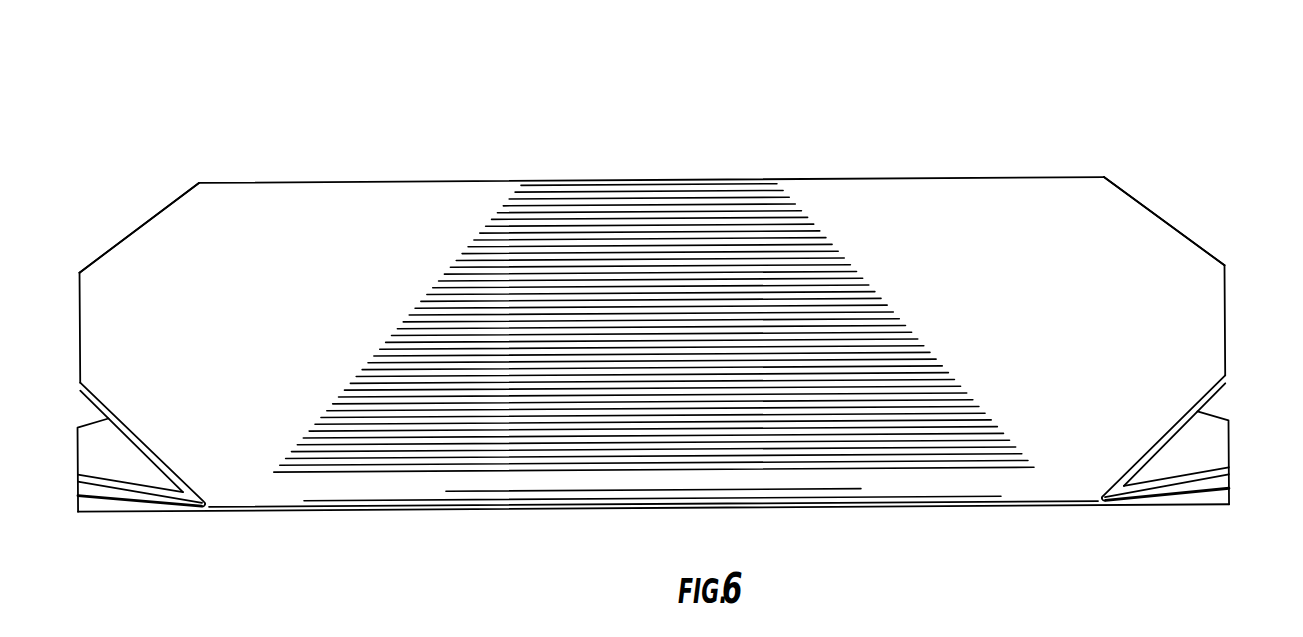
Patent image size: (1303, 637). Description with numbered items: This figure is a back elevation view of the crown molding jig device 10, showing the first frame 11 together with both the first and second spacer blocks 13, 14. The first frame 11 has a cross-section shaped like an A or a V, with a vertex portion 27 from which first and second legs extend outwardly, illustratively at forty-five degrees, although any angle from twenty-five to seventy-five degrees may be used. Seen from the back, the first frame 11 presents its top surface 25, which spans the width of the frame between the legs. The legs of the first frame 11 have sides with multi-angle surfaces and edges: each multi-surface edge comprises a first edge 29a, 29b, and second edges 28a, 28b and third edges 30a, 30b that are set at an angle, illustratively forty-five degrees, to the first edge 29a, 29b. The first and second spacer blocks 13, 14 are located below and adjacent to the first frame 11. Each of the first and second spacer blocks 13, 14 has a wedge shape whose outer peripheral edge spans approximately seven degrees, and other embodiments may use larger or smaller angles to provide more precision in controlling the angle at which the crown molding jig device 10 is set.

The crown molding jig device 10 is at (871, 70).
The first frame 11 is at (659, 165).
The first spacer block 13 is at (83, 481).
The second spacer block 14 is at (93, 507).
The top surface 25 is at (416, 277).
The vertex portion 27 is at (424, 497).
The second edge 28a is at (148, 220).
The second edge 28b is at (1153, 212).
The first edge 29a is at (80, 302).
The first edge 29b is at (1223, 337).
The third edge 30a is at (147, 448).
The third edge 30b is at (1173, 425).